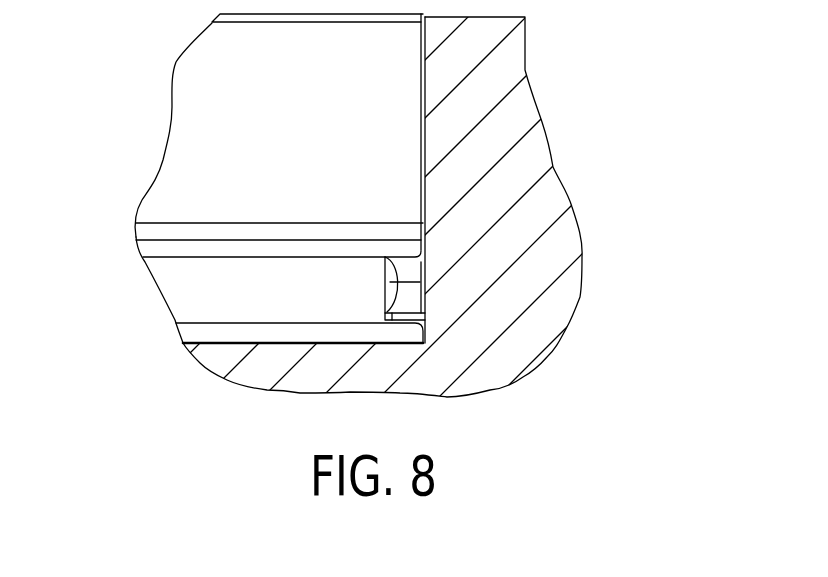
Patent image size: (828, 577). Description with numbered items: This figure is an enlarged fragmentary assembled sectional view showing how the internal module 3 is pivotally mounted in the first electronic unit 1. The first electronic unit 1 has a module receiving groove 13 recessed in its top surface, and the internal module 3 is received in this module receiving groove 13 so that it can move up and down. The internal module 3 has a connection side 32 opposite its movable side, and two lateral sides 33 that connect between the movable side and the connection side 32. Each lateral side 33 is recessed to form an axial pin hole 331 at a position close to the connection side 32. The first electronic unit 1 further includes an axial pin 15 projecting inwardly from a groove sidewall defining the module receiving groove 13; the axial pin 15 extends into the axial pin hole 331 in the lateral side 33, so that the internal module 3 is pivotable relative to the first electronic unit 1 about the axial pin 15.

The first electronic unit 1 is at (557, 210).
The internal module 3 is at (190, 128).
The connection side 32 is at (190, 297).
The module receiving groove 13 is at (278, 344).
The axial pin 15 is at (407, 292).
The lateral side 33 is at (427, 332).
The axial pin hole 331 is at (392, 318).